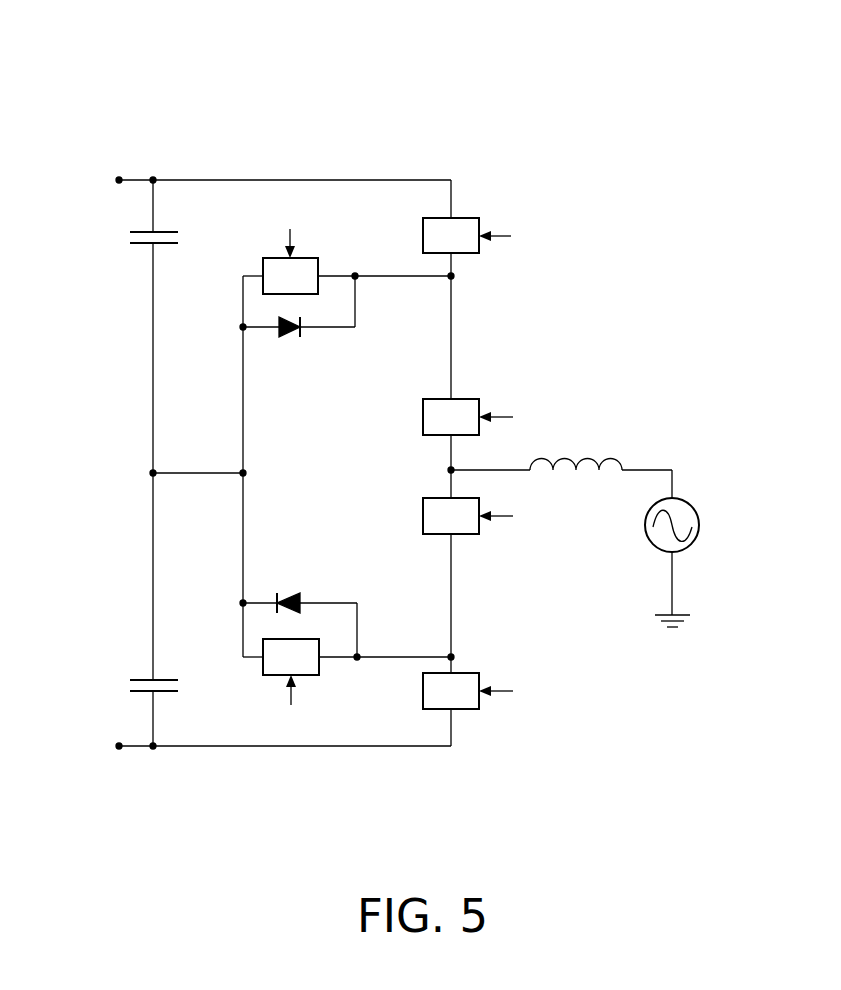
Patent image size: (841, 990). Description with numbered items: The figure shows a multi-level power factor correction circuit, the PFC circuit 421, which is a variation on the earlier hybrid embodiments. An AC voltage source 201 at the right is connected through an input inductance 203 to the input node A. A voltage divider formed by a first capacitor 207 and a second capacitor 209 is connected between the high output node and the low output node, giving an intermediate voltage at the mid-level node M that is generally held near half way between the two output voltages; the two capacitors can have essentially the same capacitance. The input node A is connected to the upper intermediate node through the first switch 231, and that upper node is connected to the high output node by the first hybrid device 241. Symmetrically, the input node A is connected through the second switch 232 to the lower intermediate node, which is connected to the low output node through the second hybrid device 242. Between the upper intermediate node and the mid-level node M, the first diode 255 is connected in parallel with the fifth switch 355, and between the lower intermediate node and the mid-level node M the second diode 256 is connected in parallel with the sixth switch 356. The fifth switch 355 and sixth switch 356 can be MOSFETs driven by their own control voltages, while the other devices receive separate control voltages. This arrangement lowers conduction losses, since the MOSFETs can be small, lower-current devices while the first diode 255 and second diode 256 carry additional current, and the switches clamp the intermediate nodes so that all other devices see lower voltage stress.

The PFC circuit 421 is at (264, 108).
The capacitor 207 is at (142, 245).
The capacitor 209 is at (140, 680).
The switch Q5 355 is at (263, 262).
The switch Q6 356 is at (278, 675).
The diode D5 255 is at (300, 334).
The diode D6 256 is at (298, 598).
The hybrid device H1 241 is at (467, 217).
The hybrid device H2 242 is at (470, 709).
The switch Q1 231 is at (423, 417).
The switch Q2 232 is at (423, 516).
The input inductance 203 is at (618, 462).
The AC voltage source 201 is at (690, 511).